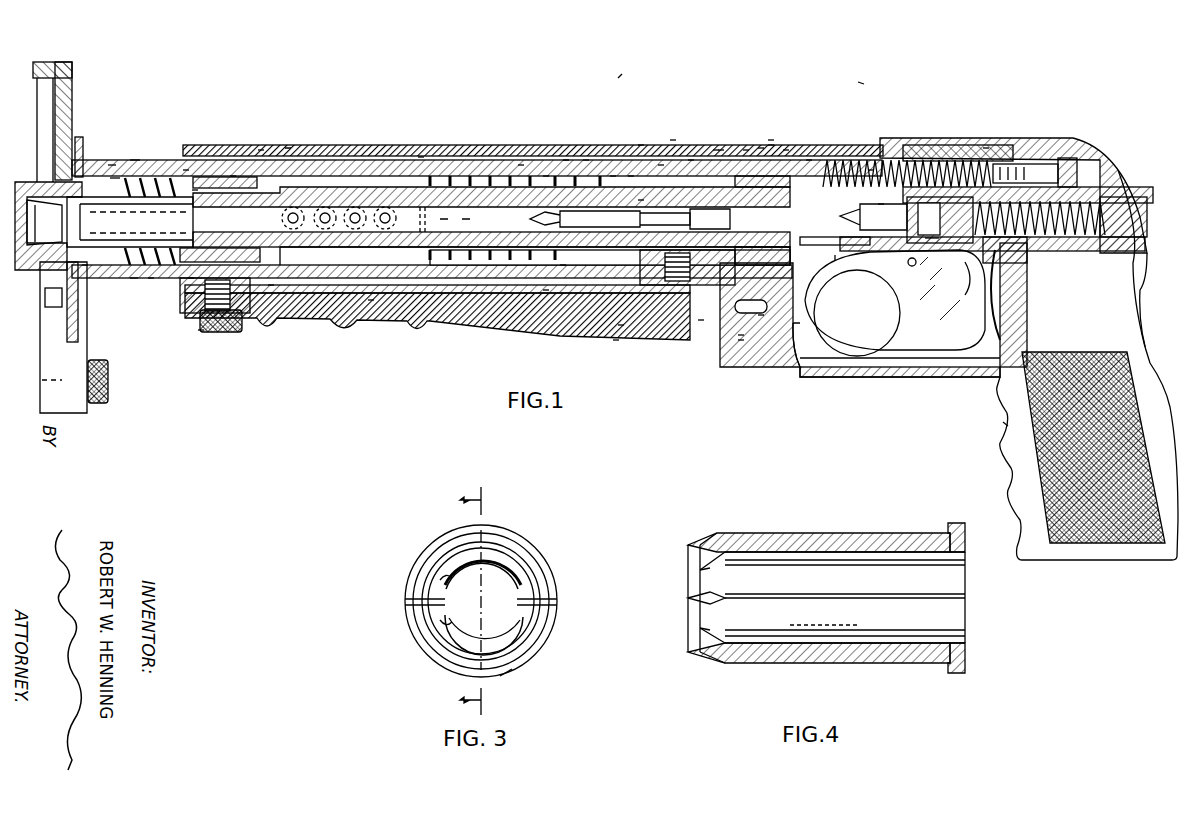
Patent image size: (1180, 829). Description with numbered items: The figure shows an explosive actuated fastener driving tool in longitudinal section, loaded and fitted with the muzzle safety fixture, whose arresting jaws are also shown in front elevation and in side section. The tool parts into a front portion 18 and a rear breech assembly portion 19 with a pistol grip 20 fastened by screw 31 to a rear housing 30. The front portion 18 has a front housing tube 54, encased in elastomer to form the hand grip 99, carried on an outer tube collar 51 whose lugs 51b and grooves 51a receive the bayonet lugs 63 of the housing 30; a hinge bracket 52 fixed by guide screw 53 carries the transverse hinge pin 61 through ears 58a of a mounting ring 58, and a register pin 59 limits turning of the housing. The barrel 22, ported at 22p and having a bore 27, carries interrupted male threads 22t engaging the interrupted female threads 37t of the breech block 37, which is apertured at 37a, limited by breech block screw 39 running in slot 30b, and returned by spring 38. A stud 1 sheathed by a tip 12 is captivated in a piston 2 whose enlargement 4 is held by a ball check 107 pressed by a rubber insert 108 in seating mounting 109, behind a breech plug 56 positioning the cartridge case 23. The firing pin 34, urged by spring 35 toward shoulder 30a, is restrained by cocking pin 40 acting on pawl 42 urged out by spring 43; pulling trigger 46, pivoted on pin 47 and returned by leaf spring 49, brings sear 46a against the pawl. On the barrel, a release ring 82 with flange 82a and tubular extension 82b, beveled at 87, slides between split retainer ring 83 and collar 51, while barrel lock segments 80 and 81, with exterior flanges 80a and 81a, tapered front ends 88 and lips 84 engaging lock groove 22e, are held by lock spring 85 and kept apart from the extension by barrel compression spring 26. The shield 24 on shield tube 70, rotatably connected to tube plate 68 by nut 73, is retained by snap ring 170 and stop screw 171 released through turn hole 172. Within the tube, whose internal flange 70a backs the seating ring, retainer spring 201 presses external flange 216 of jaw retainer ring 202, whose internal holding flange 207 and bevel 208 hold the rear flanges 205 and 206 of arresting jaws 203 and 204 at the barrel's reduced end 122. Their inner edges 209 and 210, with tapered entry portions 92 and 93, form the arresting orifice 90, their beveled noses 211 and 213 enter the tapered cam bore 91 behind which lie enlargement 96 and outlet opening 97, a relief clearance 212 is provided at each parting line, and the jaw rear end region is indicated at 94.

In FIG. 1, the stud 1 is at (554, 267).
In FIG. 1, the piston 2 is at (673, 129).
In FIG. 1, the tip 12 is at (530, 217).
In FIG. 1, the front portion 18 is at (620, 70).
In FIG. 1, the rear breech assembly portion 19 is at (866, 75).
In FIG. 1, the pistol grip 20 is at (1005, 427).
In FIG. 1, the barrel 22 is at (352, 193).
In FIG. 1, the lock groove 22e is at (546, 292).
In FIG. 1, the barrel ports 22p is at (325, 226).
In FIG. 1, the interrupted male threads 22t is at (746, 150).
In FIG. 1, the cartridge case 23 is at (761, 148).
In FIG. 1, the shield 24 is at (72, 96).
In FIG. 1, the barrel compression spring 26 is at (507, 172).
In FIG. 1, the bore 27 is at (455, 220).
In FIG. 1, the rear housing 30 is at (986, 148).
In FIG. 1, the shoulder 30a is at (938, 150).
In FIG. 1, the axially extending slot 30b is at (873, 155).
In FIG. 1, the screw 31 is at (1078, 170).
In FIG. 1, the firing pin 34 is at (881, 204).
In FIG. 1, the firing pin biasing spring 35 is at (1045, 238).
In FIG. 1, the breech block 37 is at (830, 112).
In FIG. 1, the aperture 37a is at (835, 233).
In FIG. 1, the interrupted female threads 37t is at (786, 150).
In FIG. 1, the breech block return spring 38 is at (871, 170).
In FIG. 1, the breech block screw 39 is at (809, 160).
In FIG. 1, the cocking pin 40 is at (840, 262).
In FIG. 1, the firing pin pawl 42 is at (942, 247).
In FIG. 1, the pawl spring 43 is at (933, 197).
In FIG. 1, the trigger 46 is at (920, 332).
In FIG. 1, the sear 46a is at (954, 279).
In FIG. 1, the transverse pin 47 is at (910, 266).
In FIG. 1, the leaf spring 49 is at (1000, 320).
In FIG. 1, the outer tube collar 51 is at (691, 160).
In FIG. 1, the mating grooves 51a is at (716, 150).
In FIG. 1, the lugs 51b is at (741, 337).
In FIG. 1, the hinge bracket 52 is at (690, 325).
In FIG. 1, the guide screw 53 is at (701, 322).
In FIG. 1, the front housing tube 54 is at (288, 148).
In FIG. 1, the breech plug 56 is at (857, 313).
In FIG. 1, the mounting ring 58 is at (771, 140).
In FIG. 1, the ears 58a is at (741, 342).
In FIG. 1, the register pin 59 is at (773, 145).
In FIG. 1, the transverse hinge pin 61 is at (761, 317).
In FIG. 1, the bayonet lugs 63 is at (721, 150).
In FIG. 1, the tube plate 68 is at (82, 137).
In FIG. 1, the shield tube 70 is at (136, 160).
In FIG. 1, the internal flange 70a is at (112, 165).
In FIG. 1, the nut 73 is at (45, 300).
In FIG. 1, the barrel lock segment 80 is at (612, 176).
In FIG. 1, the exterior flange 80a is at (640, 145).
In FIG. 1, the barrel lock segment 81 is at (615, 330).
In FIG. 1, the exterior flange 81a is at (616, 342).
In FIG. 1, the release ring 82 is at (455, 176).
In FIG. 1, the flange 82a is at (420, 157).
In FIG. 1, the tubular extension 82b is at (522, 165).
In FIG. 1, the split retainer ring 83 is at (370, 302).
In FIG. 1, the lip 84 is at (621, 327).
In FIG. 1, the lock spring 85 is at (640, 200).
In FIG. 1, the bevel 87 is at (546, 176).
In FIG. 1, the front ends 88 is at (586, 160).
In FIG. 1, the arresting orifice 90 is at (45, 268).
In FIG. 3, the arresting orifice 90 is at (512, 605).
In FIG. 4, the arresting orifice 90 is at (684, 630).
In FIG. 1, the tapered cam bore 91 is at (44, 222).
In FIG. 4, the entry portion 92 is at (720, 580).
In FIG. 4, the entry portion 93 is at (720, 620).
In FIG. 4, the collet rear end 94 is at (968, 642).
In FIG. 1, the enlargement 96 is at (85, 268).
In FIG. 1, the outlet opening 97 is at (25, 185).
In FIG. 1, the hand grip 99 is at (480, 330).
In FIG. 1, the ball check 107 is at (685, 213).
In FIG. 1, the rubber insert 108 is at (631, 176).
In FIG. 1, the seating mounting 109 is at (660, 165).
In FIG. 1, the reduced end 122 is at (270, 287).
In FIG. 1, the snap ring 170 is at (232, 176).
In FIG. 1, the shield stop screw 171 is at (200, 333).
In FIG. 1, the turn hole 172 is at (235, 333).
In FIG. 1, the retainer spring 201 is at (150, 280).
In FIG. 1, the jaw retainer ring 202 is at (195, 190).
In FIG. 1, the arresting jaw 203 is at (115, 178).
In FIG. 3, the arresting jaw 203 is at (430, 542).
In FIG. 4, the arresting jaw 203 is at (856, 533).
In FIG. 1, the arresting jaw 204 is at (135, 280).
In FIG. 3, the arresting jaw 204 is at (425, 655).
In FIG. 4, the arresting jaw 204 is at (880, 665).
In FIG. 1, the rear end flange 205 is at (186, 170).
In FIG. 4, the rear end flange 205 is at (955, 523).
In FIG. 1, the rear end flange 206 is at (190, 280).
In FIG. 4, the rear end flange 206 is at (960, 675).
In FIG. 1, the internal holding flange 207 is at (185, 313).
In FIG. 1, the bevel 208 is at (165, 185).
In FIG. 3, the die orifice inner edge 209 is at (438, 578).
In FIG. 4, the die orifice inner edge 209 is at (698, 572).
In FIG. 3, the die orifice inner edge 210 is at (440, 620).
In FIG. 4, the die orifice inner edge 210 is at (698, 628).
In FIG. 3, the outer nose edge 211 is at (500, 532).
In FIG. 4, the outer nose edge 211 is at (700, 548).
In FIG. 3, the release relief clearance 212 is at (405, 602).
In FIG. 4, the release relief clearance 212 is at (710, 600).
In FIG. 3, the outer nose edge 213 is at (512, 671).
In FIG. 4, the outer nose edge 213 is at (700, 660).
In FIG. 1, the external flange 216 is at (260, 150).
In FIG. 3, the piston enlargement 4 is at (455, 601).